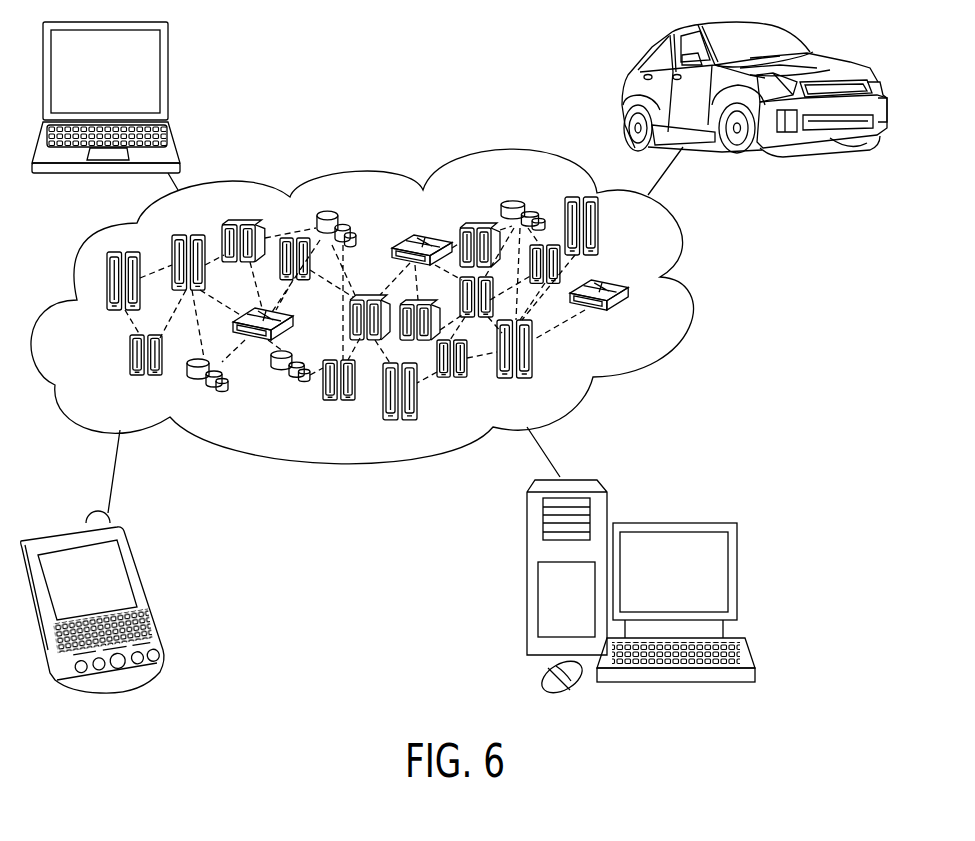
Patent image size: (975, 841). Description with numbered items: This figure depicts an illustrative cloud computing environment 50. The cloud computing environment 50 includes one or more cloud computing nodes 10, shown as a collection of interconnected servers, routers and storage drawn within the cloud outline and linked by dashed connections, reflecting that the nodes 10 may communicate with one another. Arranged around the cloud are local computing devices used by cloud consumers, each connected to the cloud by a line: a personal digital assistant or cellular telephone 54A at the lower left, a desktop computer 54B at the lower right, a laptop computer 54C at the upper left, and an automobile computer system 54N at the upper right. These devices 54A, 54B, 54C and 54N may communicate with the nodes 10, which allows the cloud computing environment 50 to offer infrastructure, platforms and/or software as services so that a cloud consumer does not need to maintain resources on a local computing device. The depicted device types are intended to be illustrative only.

The laptop computer 54C is at (168, 78).
The automobile computer system 54N is at (805, 45).
The cloud computing environment 50 is at (695, 236).
The cloud computing nodes 10 is at (646, 335).
The personal digital assistant (PDA) or cellular telephone 54A is at (138, 570).
The desktop computer 54B is at (737, 572).